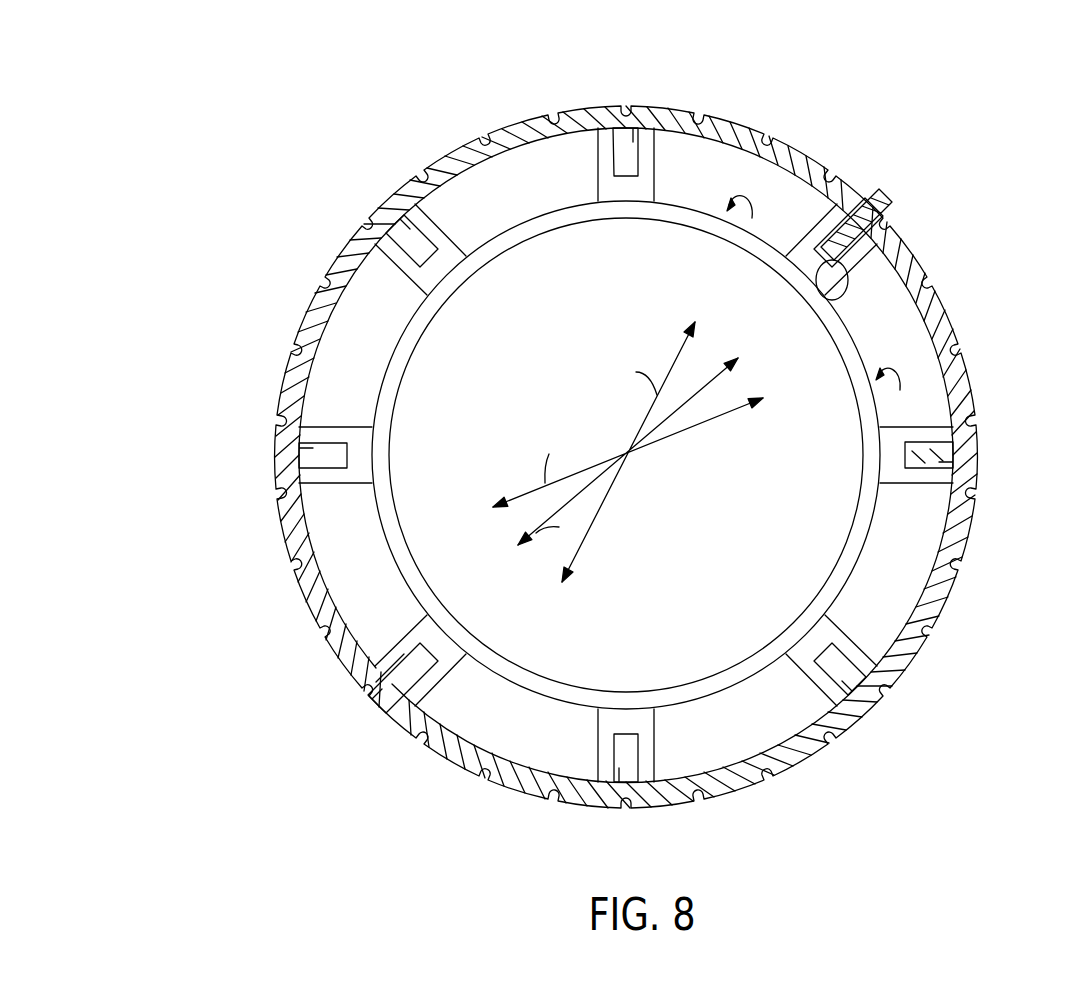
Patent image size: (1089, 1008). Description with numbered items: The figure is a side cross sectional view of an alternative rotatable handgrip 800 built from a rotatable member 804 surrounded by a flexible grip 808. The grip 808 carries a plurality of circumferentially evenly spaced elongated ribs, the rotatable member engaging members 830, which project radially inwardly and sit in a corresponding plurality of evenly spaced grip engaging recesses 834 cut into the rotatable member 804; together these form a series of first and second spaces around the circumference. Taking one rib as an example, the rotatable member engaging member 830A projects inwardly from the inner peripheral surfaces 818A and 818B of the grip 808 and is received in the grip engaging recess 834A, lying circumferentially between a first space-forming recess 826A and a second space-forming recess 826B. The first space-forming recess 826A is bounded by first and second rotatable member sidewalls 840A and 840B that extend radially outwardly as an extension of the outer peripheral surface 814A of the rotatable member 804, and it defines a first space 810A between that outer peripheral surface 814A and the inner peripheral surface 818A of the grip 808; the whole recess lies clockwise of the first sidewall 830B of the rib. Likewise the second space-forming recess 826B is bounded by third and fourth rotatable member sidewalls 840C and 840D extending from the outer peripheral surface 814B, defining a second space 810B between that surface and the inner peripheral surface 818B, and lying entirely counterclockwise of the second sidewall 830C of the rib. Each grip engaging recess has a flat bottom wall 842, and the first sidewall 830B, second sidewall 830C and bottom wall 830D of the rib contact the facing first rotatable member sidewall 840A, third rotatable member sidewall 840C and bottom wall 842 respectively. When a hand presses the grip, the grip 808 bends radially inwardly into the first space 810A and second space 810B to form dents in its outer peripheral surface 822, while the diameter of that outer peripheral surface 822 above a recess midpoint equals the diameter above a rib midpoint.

The rotatable handgrip 800 is at (250, 141).
The outer peripheral surface of the grip 822 is at (500, 123).
The flexible grip 808 is at (300, 598).
The rotatable member 804 is at (470, 612).
The grip engaging recesses 834 is at (440, 282).
The rotatable member engaging members 830 is at (403, 237).
The fourth rotatable member sidewall 840D is at (613, 172).
The inner peripheral surface of the grip 818B is at (722, 112).
The second space 810B is at (737, 170).
The outer peripheral surface of the rotatable member 814B is at (680, 205).
The second space-forming recess 826B is at (752, 220).
The second sidewall of the rotatable member engaging member 830C is at (815, 245).
The third rotatable member sidewall 840C is at (838, 200).
The grip engaging recess 834A is at (862, 212).
The rotatable member engaging member 830A is at (880, 228).
The first rotatable member sidewall 840A is at (882, 246).
The inner peripheral surface of the grip 818A is at (908, 292).
The first space 810A is at (943, 312).
The bottom wall 842 is at (815, 262).
The bottom wall of the rotatable member engaging member 830D is at (822, 300).
The first sidewall of the rotatable member engaging member 830B is at (830, 320).
The outer peripheral surface of the rotatable member 814A is at (855, 330).
The first space-forming recess 826A is at (896, 390).
The second rotatable member sidewall 840B is at (937, 442).